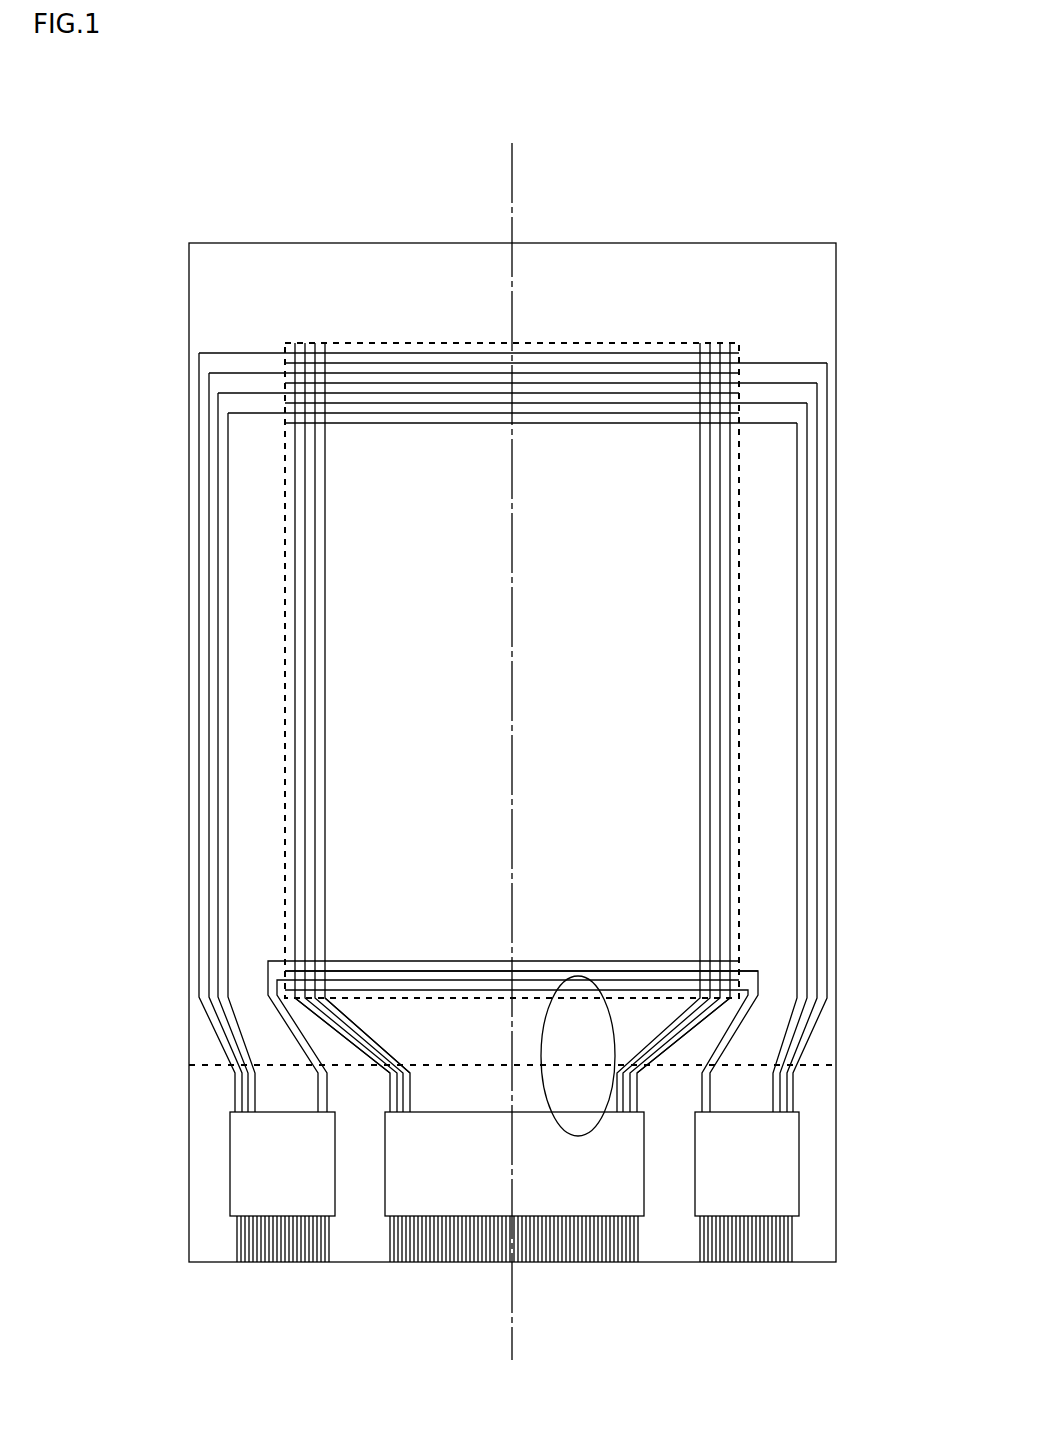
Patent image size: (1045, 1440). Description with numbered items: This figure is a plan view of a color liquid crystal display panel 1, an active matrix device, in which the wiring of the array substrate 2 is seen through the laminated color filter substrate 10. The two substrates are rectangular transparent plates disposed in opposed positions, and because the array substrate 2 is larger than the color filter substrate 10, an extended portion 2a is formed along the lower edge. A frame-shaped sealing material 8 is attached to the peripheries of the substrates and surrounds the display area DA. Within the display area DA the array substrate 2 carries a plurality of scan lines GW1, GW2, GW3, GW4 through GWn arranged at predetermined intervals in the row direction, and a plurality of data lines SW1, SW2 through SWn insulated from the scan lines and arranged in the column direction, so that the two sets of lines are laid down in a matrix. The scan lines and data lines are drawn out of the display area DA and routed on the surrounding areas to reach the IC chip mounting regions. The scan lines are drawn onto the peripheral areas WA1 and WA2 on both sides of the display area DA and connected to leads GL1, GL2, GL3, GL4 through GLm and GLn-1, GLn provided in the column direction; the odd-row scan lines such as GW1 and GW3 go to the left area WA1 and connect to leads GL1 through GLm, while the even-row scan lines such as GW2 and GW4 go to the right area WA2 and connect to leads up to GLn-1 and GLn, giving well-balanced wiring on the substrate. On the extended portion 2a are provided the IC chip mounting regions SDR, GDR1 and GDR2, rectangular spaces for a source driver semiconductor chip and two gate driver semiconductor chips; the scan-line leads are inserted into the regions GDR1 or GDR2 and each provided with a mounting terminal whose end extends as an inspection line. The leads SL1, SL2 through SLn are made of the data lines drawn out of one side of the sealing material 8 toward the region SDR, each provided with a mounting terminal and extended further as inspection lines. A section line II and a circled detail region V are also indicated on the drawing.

The color liquid crystal display panel 1 is at (155, 129).
The array substrate 2 is at (207, 1236).
The extended portion 2a is at (876, 1066).
The sealing material 8 is at (748, 453).
The color filter substrate 10 is at (818, 1050).
The display area DA is at (739, 600).
The peripheral area WA1 is at (257, 480).
The peripheral area WA2 is at (770, 528).
The scan line GW1 is at (398, 352).
The scan line GW2 is at (455, 362).
The scan line GW3 is at (553, 372).
The scan line GW4 is at (610, 382).
The scan line GWn is at (643, 985).
The data line SW1 is at (295, 518).
The data line SW2 is at (305, 560).
The data line SWn is at (728, 703).
The lead GL1 is at (199, 744).
The lead GL2 is at (209, 793).
The lead GL3 is at (218, 838).
The lead GL4 is at (228, 882).
The lead GLm is at (277, 990).
The lead GLn-1 is at (818, 848).
The lead GLn is at (828, 888).
The lead SL1 is at (337, 1032).
The lead SL2 is at (370, 1050).
The lead SLn is at (680, 1043).
The IC chip mounting region GDR1 is at (268, 1190).
The IC chip mounting region GDR2 is at (775, 1185).
The IC chip mounting region SDR is at (443, 1183).
The detail region V is at (582, 1136).
The section line II is at (510, 177).